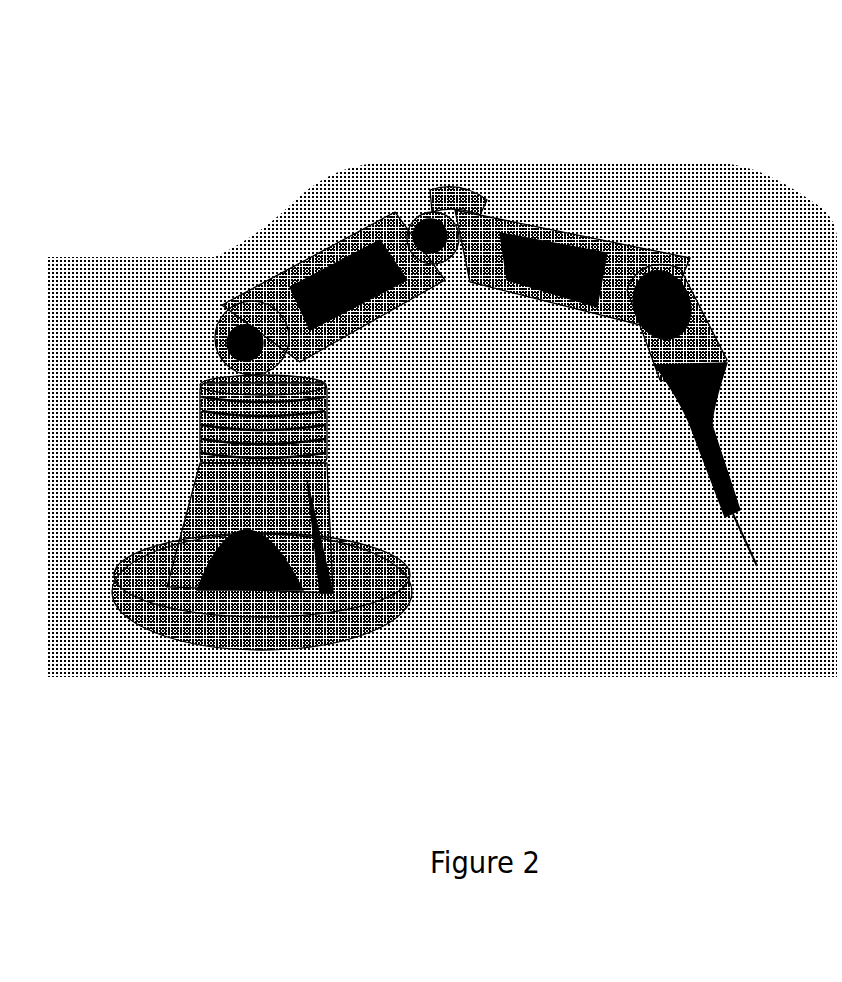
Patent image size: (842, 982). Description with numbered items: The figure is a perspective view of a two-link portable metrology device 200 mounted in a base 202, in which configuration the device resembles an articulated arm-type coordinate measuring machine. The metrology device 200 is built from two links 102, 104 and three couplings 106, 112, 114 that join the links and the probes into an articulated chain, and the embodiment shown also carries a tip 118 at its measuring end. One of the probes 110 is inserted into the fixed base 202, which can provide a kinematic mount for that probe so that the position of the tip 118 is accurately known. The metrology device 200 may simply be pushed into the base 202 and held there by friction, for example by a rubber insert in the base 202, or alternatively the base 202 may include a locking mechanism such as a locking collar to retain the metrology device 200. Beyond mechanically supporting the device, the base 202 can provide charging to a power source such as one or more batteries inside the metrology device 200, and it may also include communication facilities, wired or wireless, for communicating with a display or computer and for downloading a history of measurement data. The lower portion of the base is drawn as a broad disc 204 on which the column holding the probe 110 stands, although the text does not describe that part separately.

The metrology device 200 is at (150, 86).
The link 102 is at (337, 245).
The link 104 is at (592, 228).
The coupling 106 is at (455, 185).
The probe 110 is at (300, 358).
The coupling 112 is at (241, 308).
The coupling 114 is at (735, 300).
The tip 118 is at (755, 568).
The base 202 is at (200, 442).
The base 204 is at (150, 563).